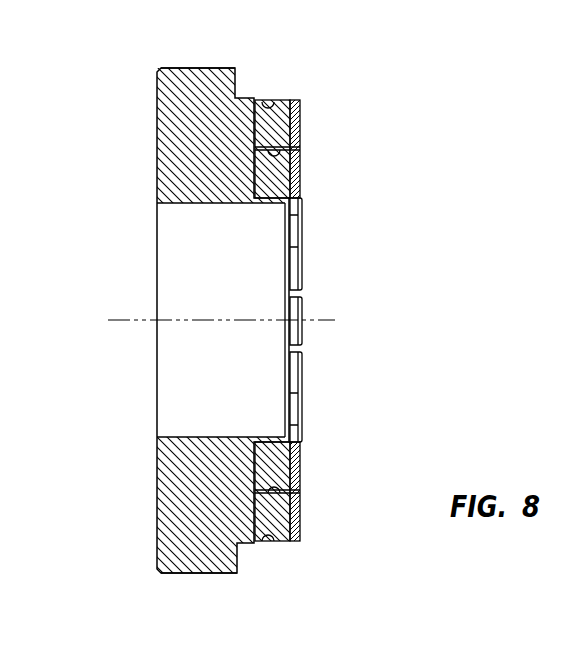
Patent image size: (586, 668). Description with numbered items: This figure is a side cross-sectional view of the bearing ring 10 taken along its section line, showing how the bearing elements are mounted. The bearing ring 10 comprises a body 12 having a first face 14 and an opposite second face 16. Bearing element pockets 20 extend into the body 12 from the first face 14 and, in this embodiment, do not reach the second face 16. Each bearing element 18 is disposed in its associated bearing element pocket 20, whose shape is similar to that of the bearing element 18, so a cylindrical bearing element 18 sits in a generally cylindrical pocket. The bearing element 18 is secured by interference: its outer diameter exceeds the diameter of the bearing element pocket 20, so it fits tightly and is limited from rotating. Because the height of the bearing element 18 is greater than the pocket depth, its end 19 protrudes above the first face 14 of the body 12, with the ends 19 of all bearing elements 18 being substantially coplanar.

The bearing ring 10 is at (208, 319).
The body 12 is at (185, 67).
The first face 14 is at (305, 322).
The second face 16 is at (178, 319).
The bearing element 18 is at (285, 112).
The end 19 is at (300, 125).
The bearing element pocket 20 is at (258, 98).